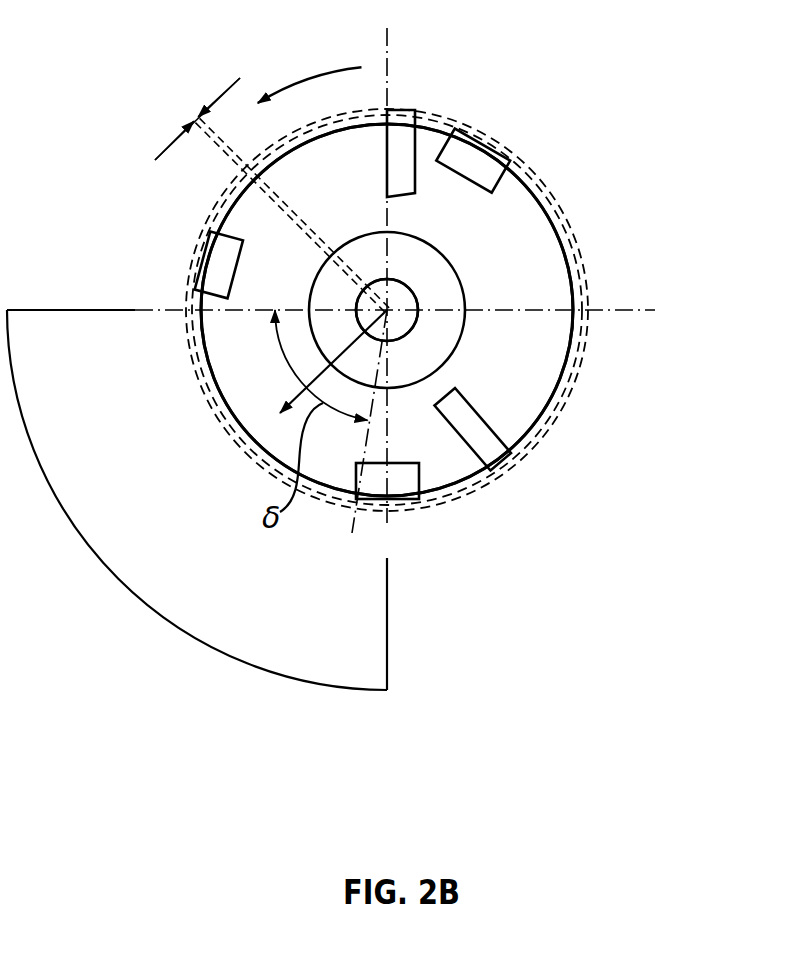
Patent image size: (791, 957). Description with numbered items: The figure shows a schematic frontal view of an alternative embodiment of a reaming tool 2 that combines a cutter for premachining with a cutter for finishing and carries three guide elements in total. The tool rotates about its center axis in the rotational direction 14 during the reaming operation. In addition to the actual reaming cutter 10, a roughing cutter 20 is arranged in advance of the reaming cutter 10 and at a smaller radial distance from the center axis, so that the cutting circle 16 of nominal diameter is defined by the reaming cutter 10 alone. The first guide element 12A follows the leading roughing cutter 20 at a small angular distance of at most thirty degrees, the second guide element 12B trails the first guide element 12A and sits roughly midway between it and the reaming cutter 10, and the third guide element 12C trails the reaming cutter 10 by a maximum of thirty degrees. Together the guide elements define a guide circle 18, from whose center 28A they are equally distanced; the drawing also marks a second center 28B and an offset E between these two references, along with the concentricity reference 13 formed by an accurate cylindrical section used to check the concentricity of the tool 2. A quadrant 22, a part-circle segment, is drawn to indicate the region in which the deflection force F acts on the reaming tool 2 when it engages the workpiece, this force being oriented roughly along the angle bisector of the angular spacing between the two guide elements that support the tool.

The reaming tool 2 is at (505, 263).
The reaming cutter 10 is at (392, 112).
The first guide element 12A is at (392, 497).
The second guide element 12B is at (210, 257).
The third guide element 12C is at (482, 155).
The concentricity reference 13 is at (436, 248).
The rotational direction 14 is at (308, 75).
The cutting circle 16 is at (552, 430).
The guide circle 18 is at (570, 362).
The roughing cutter 20 is at (500, 455).
The quadrant 22 is at (120, 578).
The center of the guide circle 28A is at (387, 310).
The axis 28B is at (387, 310).
The offset distance E is at (193, 118).
The deflection force F is at (285, 380).